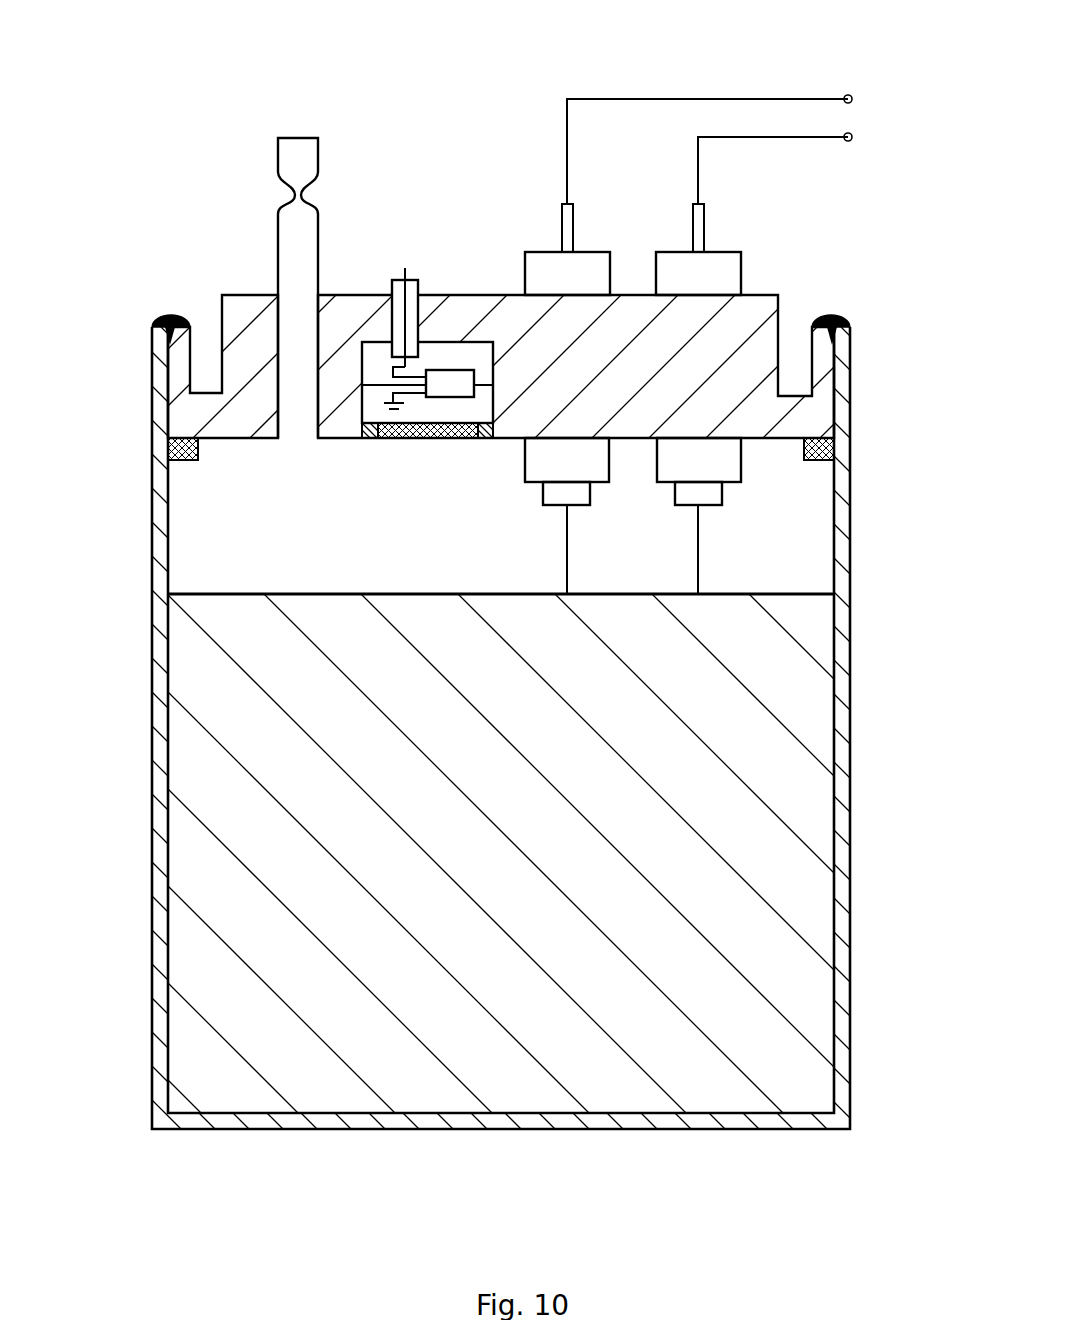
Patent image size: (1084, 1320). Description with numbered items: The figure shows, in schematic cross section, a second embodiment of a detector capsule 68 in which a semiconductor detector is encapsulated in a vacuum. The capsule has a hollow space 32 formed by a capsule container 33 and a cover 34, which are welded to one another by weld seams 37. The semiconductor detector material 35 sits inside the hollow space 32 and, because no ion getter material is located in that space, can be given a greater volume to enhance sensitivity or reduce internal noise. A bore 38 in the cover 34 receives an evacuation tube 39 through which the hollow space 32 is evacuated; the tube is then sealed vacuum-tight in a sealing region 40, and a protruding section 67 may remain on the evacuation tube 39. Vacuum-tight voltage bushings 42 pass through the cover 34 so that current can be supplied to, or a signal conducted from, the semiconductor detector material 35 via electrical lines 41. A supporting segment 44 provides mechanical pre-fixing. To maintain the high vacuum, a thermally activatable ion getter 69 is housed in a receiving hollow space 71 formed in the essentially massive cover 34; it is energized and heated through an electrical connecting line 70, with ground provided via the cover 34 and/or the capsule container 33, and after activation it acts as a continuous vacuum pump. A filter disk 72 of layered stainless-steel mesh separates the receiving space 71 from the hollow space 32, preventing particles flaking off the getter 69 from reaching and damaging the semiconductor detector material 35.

The hollow space 32 is at (251, 532).
The capsule container 33 is at (158, 722).
The cover 34 is at (492, 296).
The semiconductor detector material 35 is at (610, 1080).
The weld seam 37 is at (171, 317).
The bore 38 is at (288, 403).
The evacuation tube 39 is at (278, 255).
The sealing region 40 is at (300, 193).
The electrical lines 41 is at (690, 99).
The voltage bushings 42 is at (540, 250).
The supporting segment 44 is at (180, 447).
The protruding section 67 is at (295, 148).
The detector capsule 68 is at (438, 1148).
The thermally activatable ion getter 69 is at (444, 364).
The electrical connecting line 70 is at (405, 268).
The hollow space (receiving space) 71 is at (376, 358).
The filter disk 72 is at (423, 443).